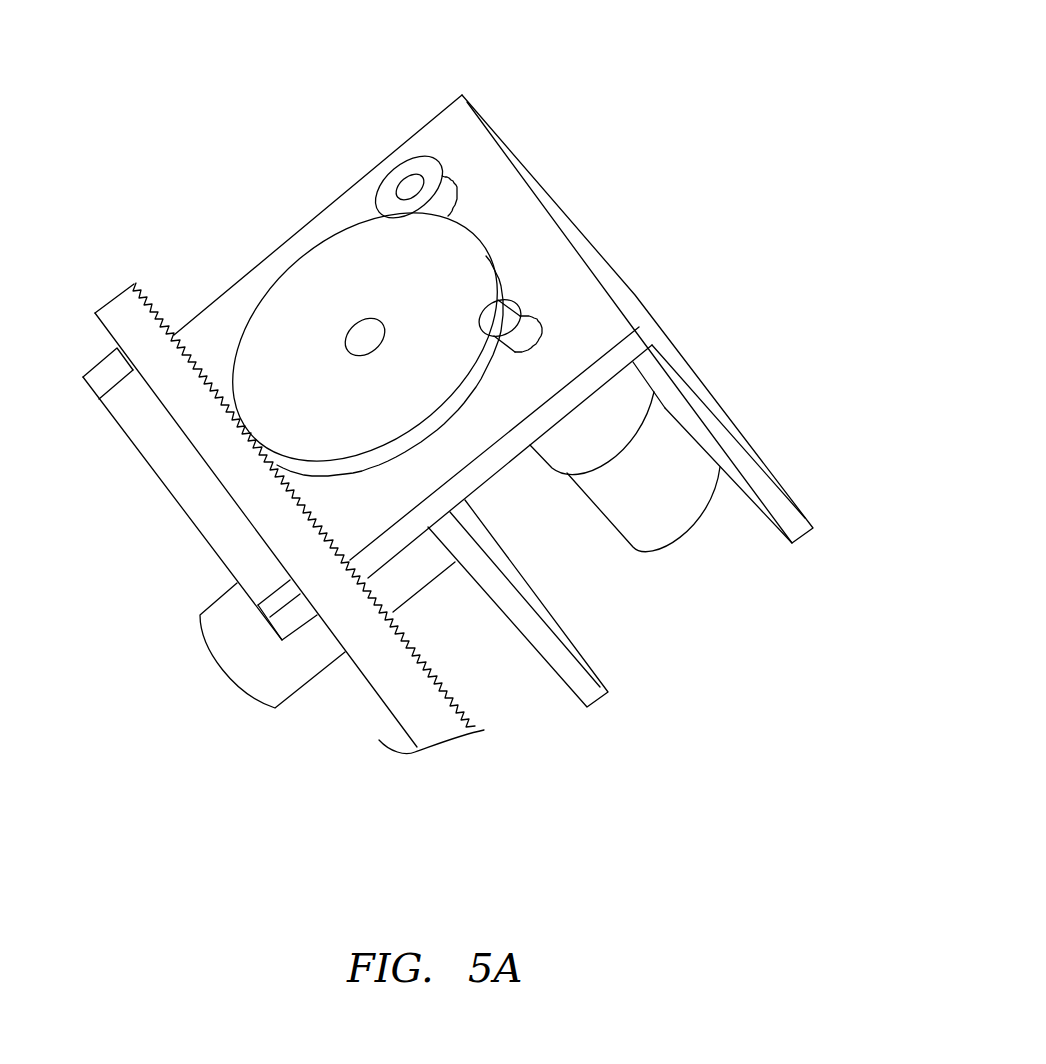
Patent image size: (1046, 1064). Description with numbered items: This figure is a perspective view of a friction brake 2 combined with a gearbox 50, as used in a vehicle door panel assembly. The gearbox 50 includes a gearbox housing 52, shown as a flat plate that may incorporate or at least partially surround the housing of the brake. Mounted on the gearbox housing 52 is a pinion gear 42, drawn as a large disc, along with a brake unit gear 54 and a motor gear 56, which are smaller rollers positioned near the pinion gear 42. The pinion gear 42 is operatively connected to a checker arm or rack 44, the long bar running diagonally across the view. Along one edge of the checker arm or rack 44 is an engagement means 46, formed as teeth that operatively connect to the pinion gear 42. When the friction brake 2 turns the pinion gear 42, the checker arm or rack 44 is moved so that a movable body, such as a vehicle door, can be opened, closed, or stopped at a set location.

The friction brake 2 is at (652, 50).
The gearbox 50 is at (670, 106).
The gearbox housing 52 is at (472, 122).
The brake unit gear 54 is at (390, 183).
The motor gear 56 is at (517, 308).
The pinion gear 42 is at (290, 305).
The checker arm or rack 44 is at (190, 408).
The engagement means 46 is at (436, 666).